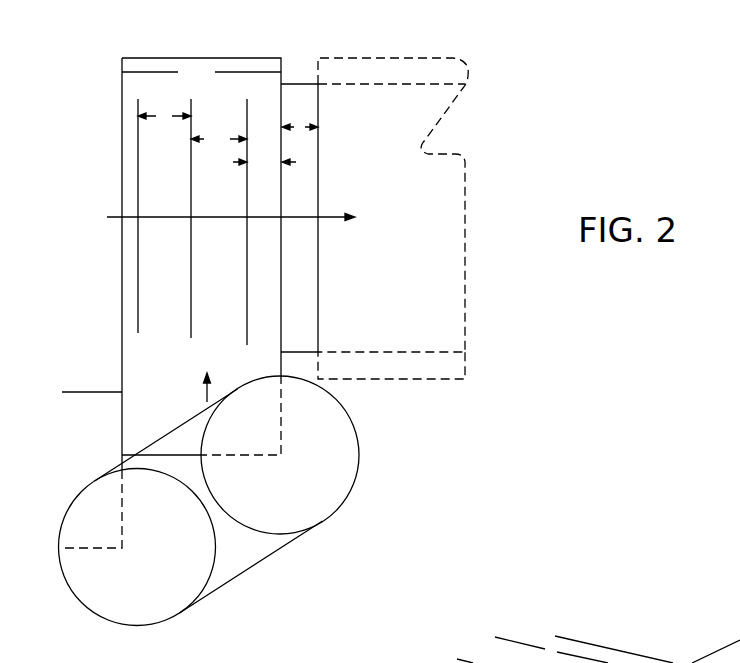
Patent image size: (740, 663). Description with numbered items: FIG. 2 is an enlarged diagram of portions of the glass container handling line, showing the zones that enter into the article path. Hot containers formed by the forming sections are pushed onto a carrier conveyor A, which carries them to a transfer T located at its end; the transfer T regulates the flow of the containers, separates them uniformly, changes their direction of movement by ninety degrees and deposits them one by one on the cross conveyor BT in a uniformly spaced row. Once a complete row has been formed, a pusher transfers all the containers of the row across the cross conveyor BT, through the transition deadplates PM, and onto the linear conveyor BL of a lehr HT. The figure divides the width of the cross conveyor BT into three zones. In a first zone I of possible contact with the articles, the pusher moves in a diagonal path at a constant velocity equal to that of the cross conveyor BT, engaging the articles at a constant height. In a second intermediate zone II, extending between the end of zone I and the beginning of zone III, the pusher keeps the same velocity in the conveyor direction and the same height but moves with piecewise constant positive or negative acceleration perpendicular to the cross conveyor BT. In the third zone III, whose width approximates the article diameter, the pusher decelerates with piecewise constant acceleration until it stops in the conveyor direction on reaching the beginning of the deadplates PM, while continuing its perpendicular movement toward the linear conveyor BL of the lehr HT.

The cross conveyor BT is at (246, 40).
The transition deadplates PM is at (298, 76).
The lehr HT is at (400, 57).
The linear conveyor BL is at (350, 84).
The transfer T is at (322, 535).
The carrier conveyor A is at (105, 462).
The first zone I is at (164, 117).
The second intermediate zone II is at (219, 140).
The third zone III is at (264, 163).